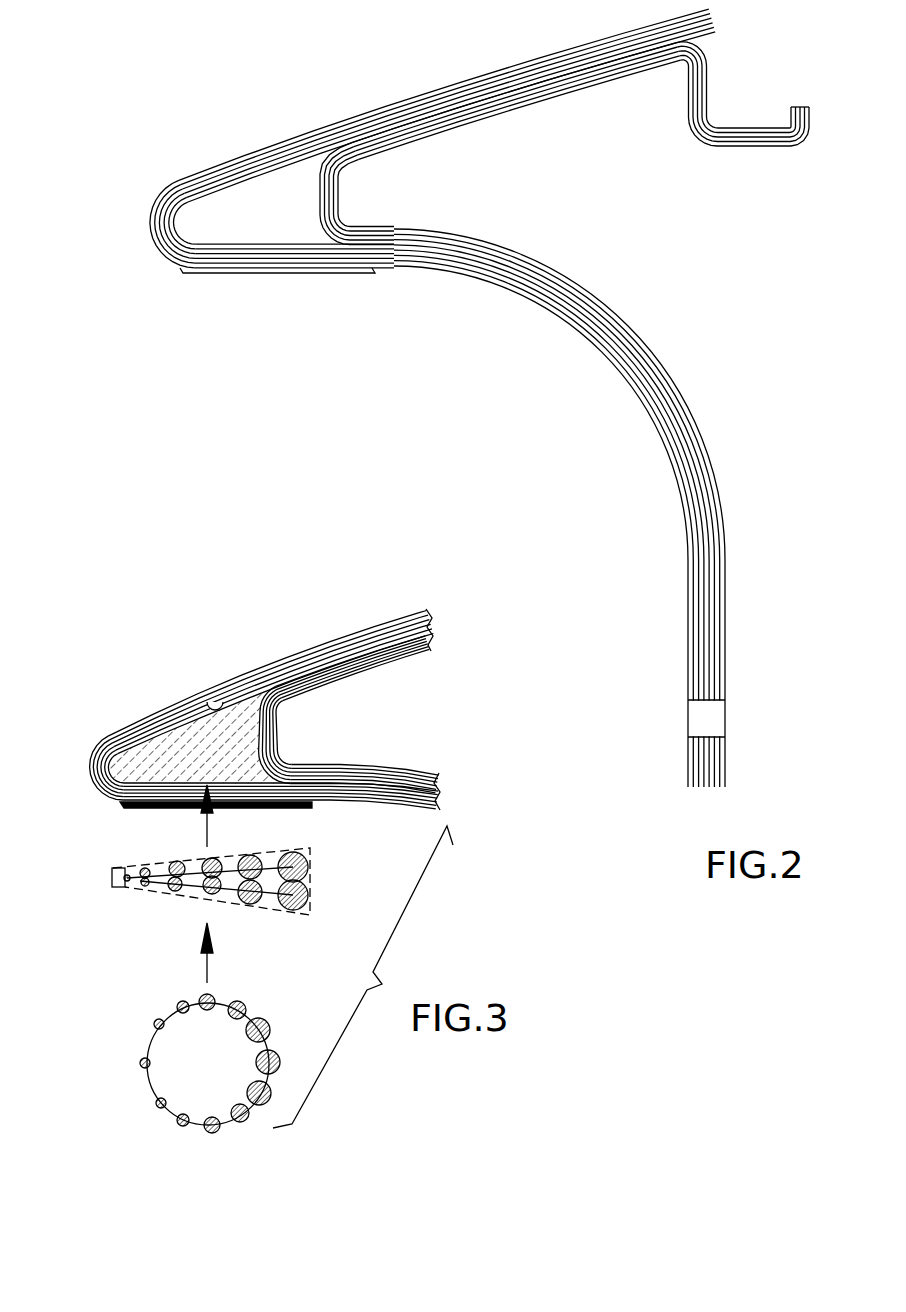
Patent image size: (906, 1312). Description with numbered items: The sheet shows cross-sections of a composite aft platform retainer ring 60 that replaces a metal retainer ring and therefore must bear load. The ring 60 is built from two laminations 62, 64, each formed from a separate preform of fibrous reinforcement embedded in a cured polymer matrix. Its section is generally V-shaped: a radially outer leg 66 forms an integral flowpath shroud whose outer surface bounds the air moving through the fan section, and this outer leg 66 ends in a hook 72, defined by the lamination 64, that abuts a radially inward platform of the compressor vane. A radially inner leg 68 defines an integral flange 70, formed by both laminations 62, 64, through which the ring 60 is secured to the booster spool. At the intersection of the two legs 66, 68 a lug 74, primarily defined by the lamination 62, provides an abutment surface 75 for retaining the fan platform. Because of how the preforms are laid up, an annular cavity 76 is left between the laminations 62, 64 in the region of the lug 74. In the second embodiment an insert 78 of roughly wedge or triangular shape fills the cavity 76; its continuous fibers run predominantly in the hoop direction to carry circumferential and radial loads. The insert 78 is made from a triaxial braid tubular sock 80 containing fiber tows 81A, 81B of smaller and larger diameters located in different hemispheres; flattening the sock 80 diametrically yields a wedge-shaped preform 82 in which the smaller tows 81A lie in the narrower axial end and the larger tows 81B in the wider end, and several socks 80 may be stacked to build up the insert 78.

In FIG. 2, the composite aft platform retainer ring 60 is at (454, 398).
In FIG. 3, the composite aft platform retainer ring 60 is at (228, 690).
In FIG. 2, the lamination 62 is at (293, 258).
In FIG. 3, the lamination 62 is at (107, 743).
In FIG. 2, the lamination 64 is at (330, 203).
In FIG. 3, the lamination 64 is at (272, 732).
In FIG. 2, the radially outer leg 66 is at (447, 105).
In FIG. 3, the radially outer leg 66 is at (338, 618).
In FIG. 2, the radially inner leg 68 is at (647, 299).
In FIG. 2, the flange 70 is at (749, 702).
In FIG. 2, the hook 72 is at (749, 171).
In FIG. 2, the lug 74 is at (132, 197).
In FIG. 3, the lug 74 is at (68, 796).
In FIG. 2, the abutment surface 75 is at (243, 272).
In FIG. 3, the abutment surface 75 is at (180, 808).
In FIG. 2, the cavity 76 is at (257, 200).
In FIG. 3, the cavity 76 is at (205, 700).
In FIG. 3, the insert 78 is at (143, 738).
In FIG. 3, the sock 80 is at (144, 1147).
In FIG. 3, the fiber tows 81A is at (147, 887).
In FIG. 3, the fiber tows 81B is at (293, 910).
In FIG. 3, the preform 82 is at (232, 979).